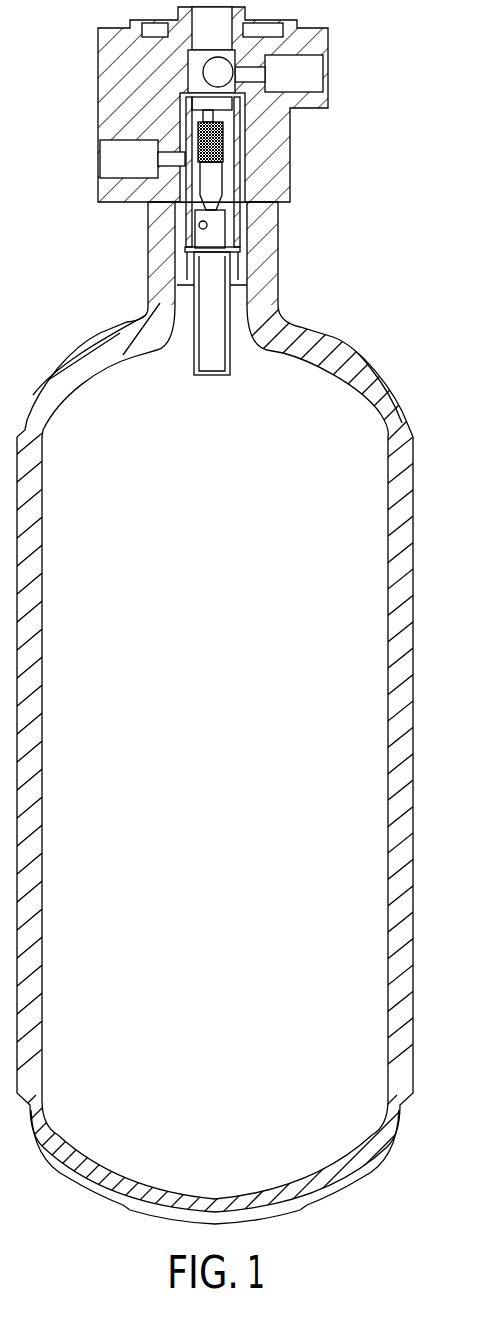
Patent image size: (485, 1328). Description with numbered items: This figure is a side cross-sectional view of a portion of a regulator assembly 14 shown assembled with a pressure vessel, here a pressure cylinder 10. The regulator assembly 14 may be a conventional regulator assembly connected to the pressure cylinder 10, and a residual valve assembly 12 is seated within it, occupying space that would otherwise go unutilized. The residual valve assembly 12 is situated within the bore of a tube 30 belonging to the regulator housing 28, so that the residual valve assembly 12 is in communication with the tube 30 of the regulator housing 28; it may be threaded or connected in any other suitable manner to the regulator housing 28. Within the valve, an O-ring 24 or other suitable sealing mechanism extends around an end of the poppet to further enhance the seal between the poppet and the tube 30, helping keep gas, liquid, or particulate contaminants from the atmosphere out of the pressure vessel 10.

The pressure cylinder 10 is at (350, 433).
The residual valve assembly 12 is at (252, 154).
The regulator assembly 14 is at (77, 70).
The O-ring 24 is at (241, 193).
The regulator housing 28 is at (158, 190).
The tube 30 is at (213, 343).